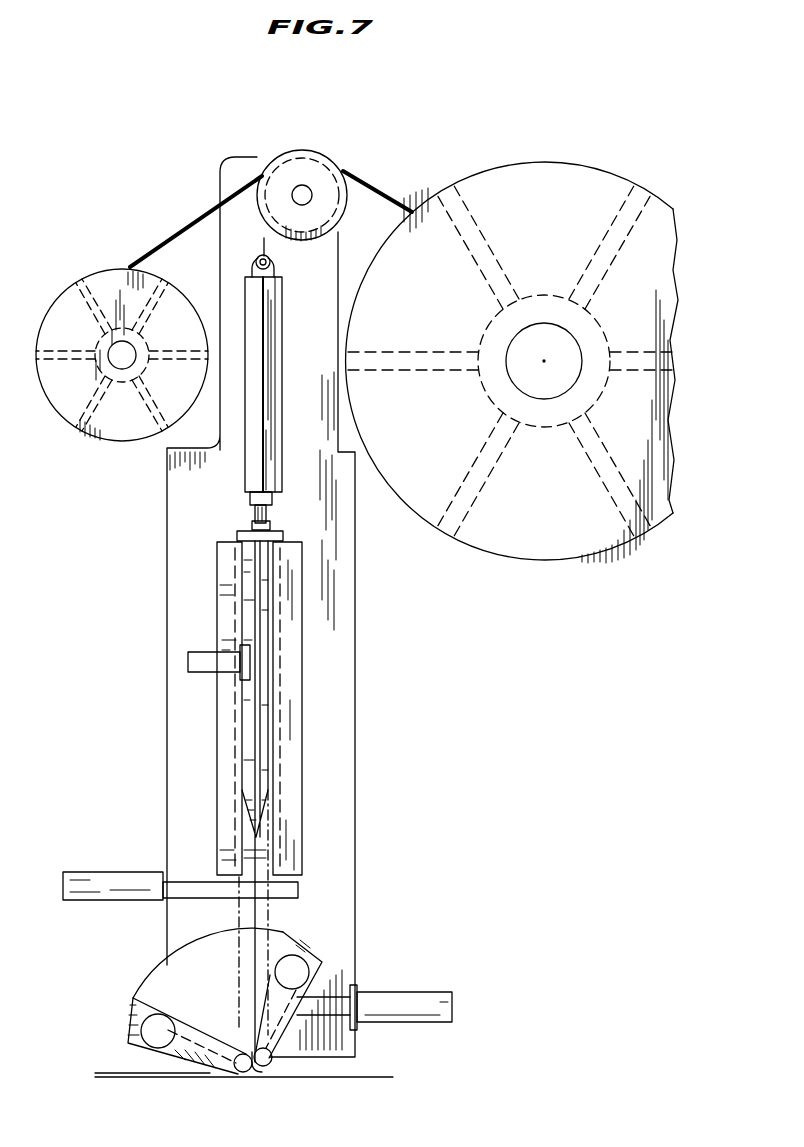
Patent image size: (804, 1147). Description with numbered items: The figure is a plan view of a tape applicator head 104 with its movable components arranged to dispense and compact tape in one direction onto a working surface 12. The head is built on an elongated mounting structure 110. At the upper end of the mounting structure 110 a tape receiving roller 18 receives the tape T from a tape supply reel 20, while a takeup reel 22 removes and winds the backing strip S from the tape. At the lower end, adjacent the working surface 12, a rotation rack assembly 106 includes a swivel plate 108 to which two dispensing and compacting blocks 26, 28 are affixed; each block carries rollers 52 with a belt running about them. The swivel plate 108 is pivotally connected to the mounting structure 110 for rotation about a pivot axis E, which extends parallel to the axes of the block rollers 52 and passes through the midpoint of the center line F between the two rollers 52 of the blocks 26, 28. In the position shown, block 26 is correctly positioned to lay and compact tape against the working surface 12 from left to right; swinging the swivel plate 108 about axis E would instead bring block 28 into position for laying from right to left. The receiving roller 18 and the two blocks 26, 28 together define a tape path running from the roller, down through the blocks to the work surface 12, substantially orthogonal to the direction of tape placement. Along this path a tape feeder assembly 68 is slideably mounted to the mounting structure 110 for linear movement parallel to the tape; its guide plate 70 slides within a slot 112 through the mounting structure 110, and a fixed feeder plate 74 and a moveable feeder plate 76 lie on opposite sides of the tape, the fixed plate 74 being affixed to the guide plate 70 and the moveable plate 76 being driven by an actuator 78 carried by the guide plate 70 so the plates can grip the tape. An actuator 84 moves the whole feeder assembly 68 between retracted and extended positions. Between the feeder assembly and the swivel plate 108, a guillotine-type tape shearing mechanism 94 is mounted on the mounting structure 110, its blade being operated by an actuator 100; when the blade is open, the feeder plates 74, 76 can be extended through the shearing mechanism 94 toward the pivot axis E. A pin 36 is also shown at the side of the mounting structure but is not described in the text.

The working surface 12 is at (365, 1077).
The tape receiving roller 18 is at (315, 158).
The tape supply reel 20 is at (657, 205).
The takeup reel 22 is at (73, 300).
The dispensing and compacting block 26 is at (150, 1032).
The dispensing and compacting block 28 is at (300, 968).
The pivot pin 36 is at (436, 1006).
The roller 52 is at (245, 1050).
The tape feeder assembly 68 is at (240, 529).
The guide plate 70 is at (283, 537).
The fixed feeder plate 74 is at (266, 649).
The moveable feeder plate 76 is at (248, 625).
The actuator 78 is at (205, 672).
The actuator 84 is at (275, 348).
The guillotine-type tape shearing mechanism 94 is at (185, 883).
The actuator 100 is at (90, 875).
The tape applicator head 104 is at (307, 607).
The rotation rack assembly 106 is at (145, 980).
The swivel plate 108 is at (200, 962).
The mounting structure 110 is at (345, 717).
The slot 112 is at (284, 585).
The backing strip S is at (160, 228).
The tape T is at (377, 188).
The center line F is at (240, 1068).
The pivot axis E is at (258, 1070).